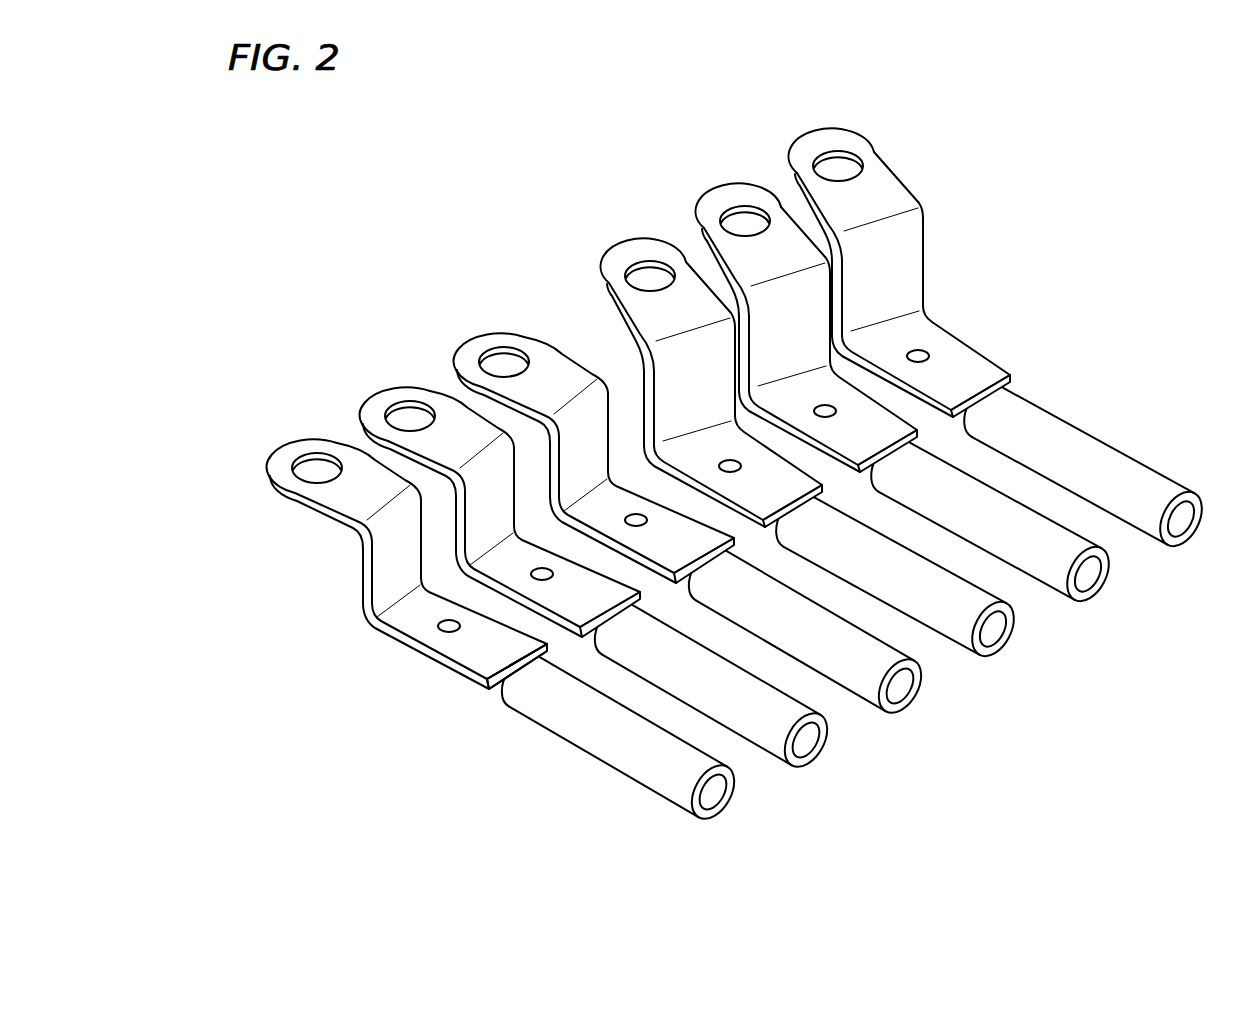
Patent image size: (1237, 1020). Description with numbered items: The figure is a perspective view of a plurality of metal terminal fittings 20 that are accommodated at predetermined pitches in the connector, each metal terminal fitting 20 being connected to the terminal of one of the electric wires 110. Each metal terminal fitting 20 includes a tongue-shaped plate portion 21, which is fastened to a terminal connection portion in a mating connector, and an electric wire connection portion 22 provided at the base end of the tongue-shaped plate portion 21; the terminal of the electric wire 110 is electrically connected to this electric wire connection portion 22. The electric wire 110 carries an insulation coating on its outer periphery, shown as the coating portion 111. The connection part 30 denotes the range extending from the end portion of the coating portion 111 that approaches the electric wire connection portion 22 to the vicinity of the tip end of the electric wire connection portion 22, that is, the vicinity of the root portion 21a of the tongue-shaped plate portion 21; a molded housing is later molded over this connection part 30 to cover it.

The metal terminal fitting 20 is at (697, 471).
The tongue-shaped plate portion 21 is at (887, 174).
The root portion 21a is at (395, 560).
The electric wire connection portion 22 is at (967, 360).
The connection part 30 is at (541, 759).
The electric wire 110 is at (856, 619).
The coating portion 111 is at (547, 697).